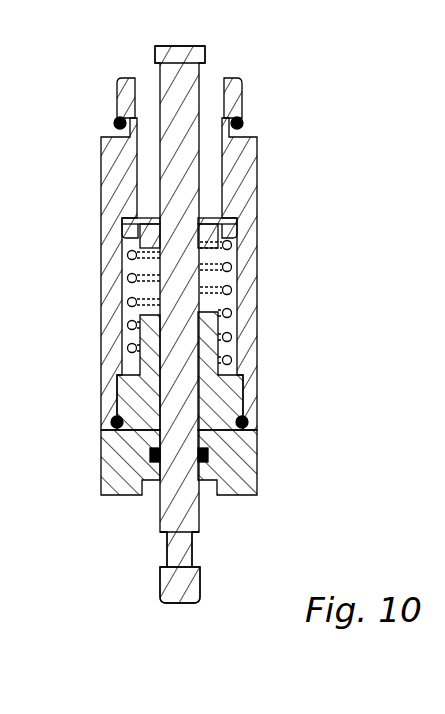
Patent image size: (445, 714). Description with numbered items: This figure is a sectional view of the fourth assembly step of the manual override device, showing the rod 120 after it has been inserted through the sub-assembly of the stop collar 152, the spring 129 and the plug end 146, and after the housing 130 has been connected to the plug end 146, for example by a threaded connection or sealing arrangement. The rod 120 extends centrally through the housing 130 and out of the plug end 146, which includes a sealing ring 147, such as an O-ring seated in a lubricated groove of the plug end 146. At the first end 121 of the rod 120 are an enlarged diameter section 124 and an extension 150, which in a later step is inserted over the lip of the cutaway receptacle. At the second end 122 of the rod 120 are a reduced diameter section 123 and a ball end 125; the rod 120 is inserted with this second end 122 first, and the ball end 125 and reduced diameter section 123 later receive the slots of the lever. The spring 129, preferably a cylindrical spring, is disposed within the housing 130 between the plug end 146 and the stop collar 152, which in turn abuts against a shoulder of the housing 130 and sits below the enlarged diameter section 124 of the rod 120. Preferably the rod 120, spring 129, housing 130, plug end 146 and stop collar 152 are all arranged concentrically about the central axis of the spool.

The rod 120 is at (187, 163).
The extension 150 is at (158, 53).
The first end 121 is at (214, 61).
The enlarged diameter section 124 is at (160, 110).
The housing 130 is at (247, 187).
The stop collar 152 is at (243, 217).
The spring 129 is at (240, 283).
The plug end 146 is at (227, 403).
The sealing ring 147 is at (210, 451).
The reduced diameter section 123 is at (175, 550).
The second end 122 is at (223, 550).
The ball end 125 is at (178, 585).